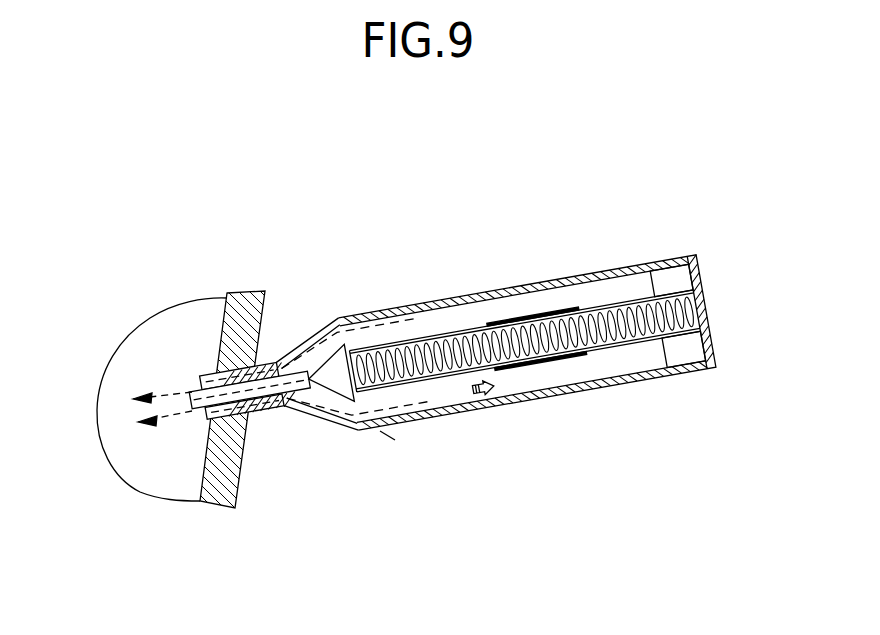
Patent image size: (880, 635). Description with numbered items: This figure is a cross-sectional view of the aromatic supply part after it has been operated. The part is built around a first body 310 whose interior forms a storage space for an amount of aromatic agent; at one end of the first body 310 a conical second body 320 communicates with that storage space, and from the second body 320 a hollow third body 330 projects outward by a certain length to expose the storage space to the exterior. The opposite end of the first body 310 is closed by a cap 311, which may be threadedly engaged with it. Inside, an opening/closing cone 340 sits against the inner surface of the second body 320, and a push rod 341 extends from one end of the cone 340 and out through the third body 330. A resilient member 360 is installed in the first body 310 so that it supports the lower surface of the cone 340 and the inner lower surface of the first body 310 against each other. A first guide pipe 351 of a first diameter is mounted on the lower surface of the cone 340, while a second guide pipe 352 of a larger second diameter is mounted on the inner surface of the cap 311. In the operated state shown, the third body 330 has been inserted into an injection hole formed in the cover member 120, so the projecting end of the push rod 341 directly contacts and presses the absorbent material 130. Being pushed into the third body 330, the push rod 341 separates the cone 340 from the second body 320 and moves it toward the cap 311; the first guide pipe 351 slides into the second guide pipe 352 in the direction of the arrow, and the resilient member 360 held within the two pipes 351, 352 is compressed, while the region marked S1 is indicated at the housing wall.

The cover member 120 is at (242, 305).
The absorbent material 130 is at (150, 343).
The first body 310 is at (606, 386).
The cap 311 is at (697, 368).
The second body 320 is at (343, 428).
The third body 330 is at (260, 414).
The opening/closing cone 340 is at (335, 378).
The push rod 341 is at (275, 385).
The first guide pipe 351 is at (458, 338).
The second guide pipe 352 is at (582, 316).
The resilient member 360 is at (670, 316).
The gap S1 is at (386, 440).